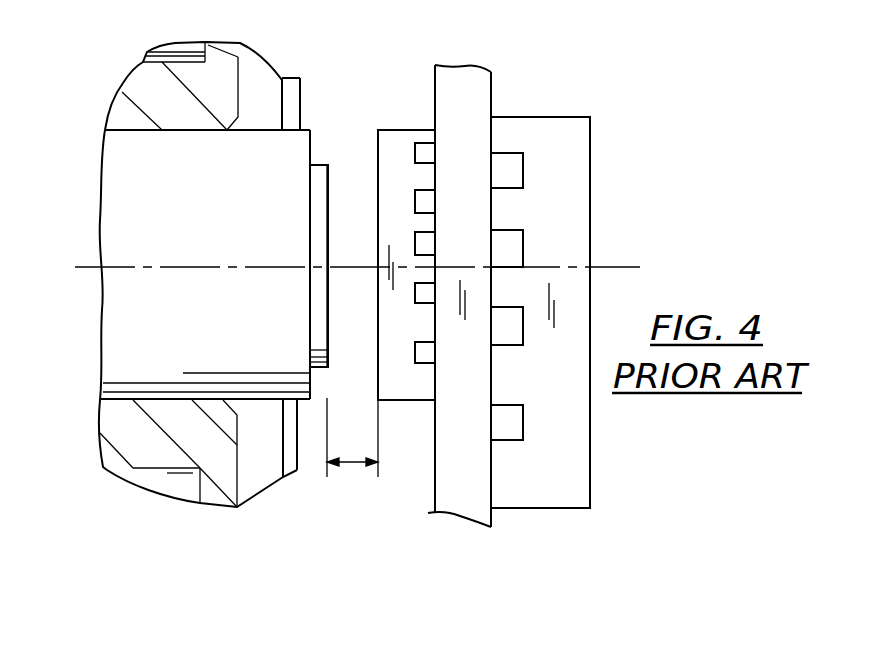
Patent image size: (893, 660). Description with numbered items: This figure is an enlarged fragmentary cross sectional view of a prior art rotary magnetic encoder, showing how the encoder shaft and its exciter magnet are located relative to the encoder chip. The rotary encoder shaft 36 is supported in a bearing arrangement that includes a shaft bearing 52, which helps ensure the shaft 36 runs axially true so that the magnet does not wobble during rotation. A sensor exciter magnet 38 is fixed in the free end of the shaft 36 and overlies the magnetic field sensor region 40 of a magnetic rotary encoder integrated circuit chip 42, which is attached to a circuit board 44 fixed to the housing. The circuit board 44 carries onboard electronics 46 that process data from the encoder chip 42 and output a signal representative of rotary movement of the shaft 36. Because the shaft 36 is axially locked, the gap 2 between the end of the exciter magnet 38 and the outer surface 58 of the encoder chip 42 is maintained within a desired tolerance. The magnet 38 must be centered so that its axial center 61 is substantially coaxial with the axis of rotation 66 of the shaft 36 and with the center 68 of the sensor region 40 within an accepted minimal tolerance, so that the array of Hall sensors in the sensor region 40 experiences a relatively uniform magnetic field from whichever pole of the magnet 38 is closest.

The shaft bearing 52 is at (137, 82).
The rotary encoder shaft 36 is at (110, 166).
The sensor exciter magnet 38 is at (321, 160).
The outer surface of the encoder chip 58 is at (380, 144).
The magnetic rotary encoder integrated circuit chip 42 is at (408, 130).
The magnetic field sensor region 40 is at (437, 150).
The circuit board 44 is at (467, 507).
The onboard electronics 46 is at (634, 177).
The axis of rotation 66 is at (205, 229).
The axial center of the magnet 61 is at (328, 267).
The center of the sensor region 68 is at (377, 270).
The gap dimension 2 is at (353, 463).